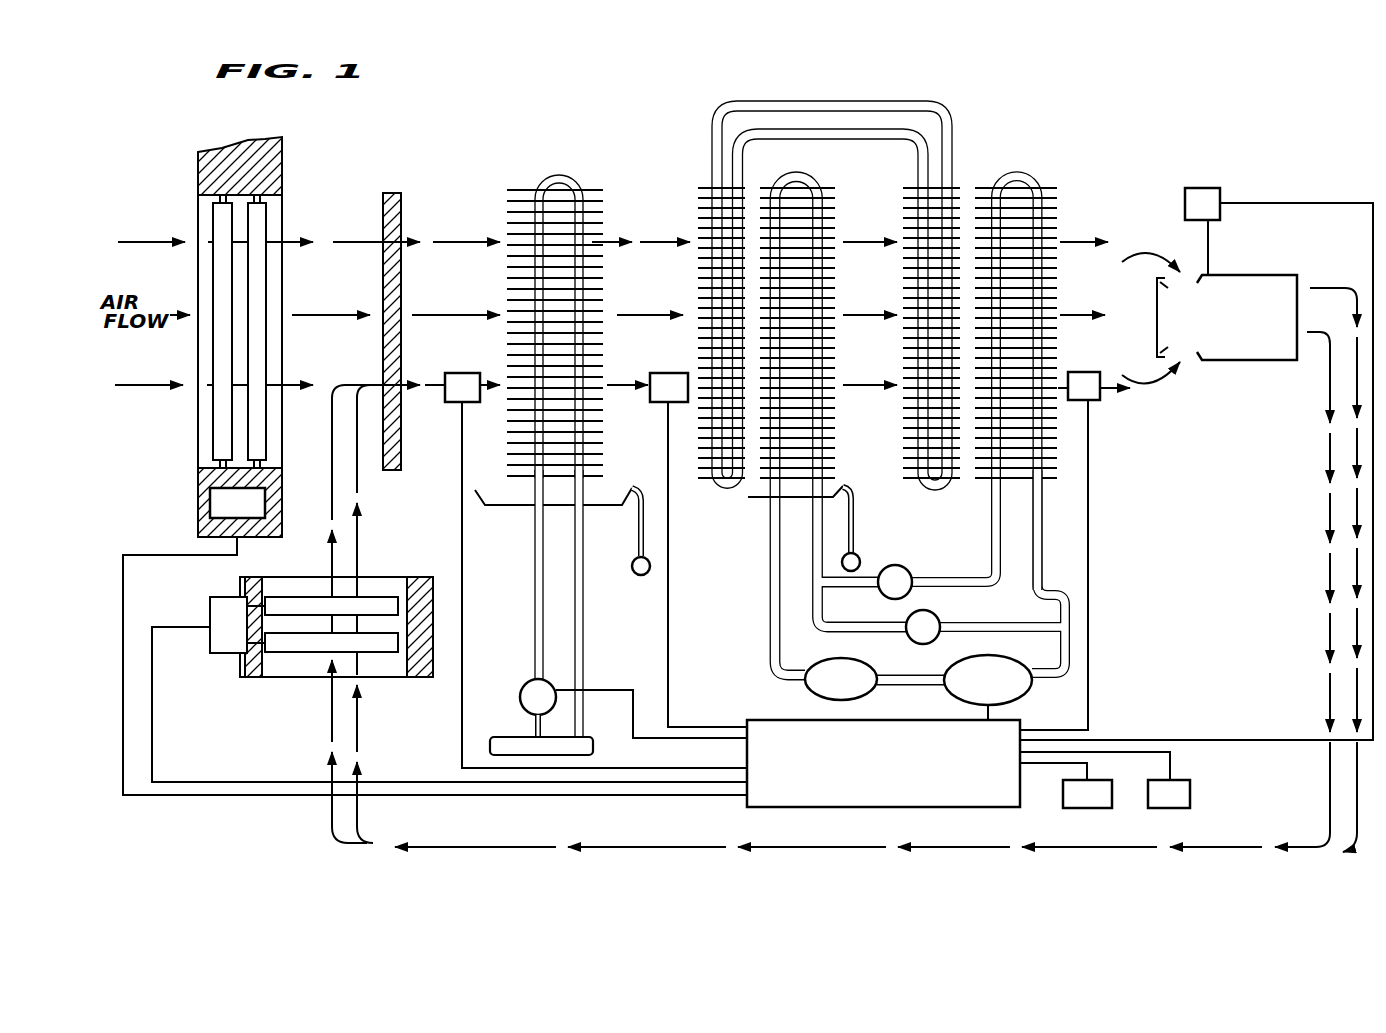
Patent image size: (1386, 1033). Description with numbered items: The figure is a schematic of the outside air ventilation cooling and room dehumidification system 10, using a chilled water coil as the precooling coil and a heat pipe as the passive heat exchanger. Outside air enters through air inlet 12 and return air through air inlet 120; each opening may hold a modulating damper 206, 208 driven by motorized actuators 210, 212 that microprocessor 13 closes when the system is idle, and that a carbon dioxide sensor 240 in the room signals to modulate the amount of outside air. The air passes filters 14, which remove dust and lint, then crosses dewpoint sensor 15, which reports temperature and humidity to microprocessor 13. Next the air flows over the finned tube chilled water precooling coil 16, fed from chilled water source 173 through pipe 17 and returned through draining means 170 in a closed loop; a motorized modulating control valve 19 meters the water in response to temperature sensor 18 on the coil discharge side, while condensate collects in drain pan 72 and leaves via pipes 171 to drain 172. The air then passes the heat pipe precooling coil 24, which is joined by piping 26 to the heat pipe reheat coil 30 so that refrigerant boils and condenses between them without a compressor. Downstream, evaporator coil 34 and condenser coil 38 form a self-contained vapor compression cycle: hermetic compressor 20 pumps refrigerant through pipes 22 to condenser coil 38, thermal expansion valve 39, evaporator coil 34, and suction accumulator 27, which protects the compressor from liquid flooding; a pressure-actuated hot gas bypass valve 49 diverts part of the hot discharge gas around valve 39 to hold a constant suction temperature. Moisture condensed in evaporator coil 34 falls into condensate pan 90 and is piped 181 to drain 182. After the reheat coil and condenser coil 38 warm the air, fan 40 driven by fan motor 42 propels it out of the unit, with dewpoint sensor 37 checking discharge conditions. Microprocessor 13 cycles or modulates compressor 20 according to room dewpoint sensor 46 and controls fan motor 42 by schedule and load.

The outside air ventilation cooling and room dehumidification system 10 is at (513, 132).
The outside air inlet 12 is at (198, 478).
The microprocessor controller 13 is at (755, 720).
The filters 14 is at (392, 193).
The dewpoint sensor 15 is at (465, 375).
The chilled water precooling coil 16 is at (510, 190).
The pipe 17 is at (533, 590).
The temperature sensor 18 is at (670, 375).
The modulating control valve 19 is at (525, 683).
The hermetic compressor 20 is at (1025, 668).
The pipes 22 is at (1045, 528).
The heat pipe precooling coil 24 is at (700, 190).
The piping 26 is at (888, 106).
The suction accumulator 27 is at (822, 662).
The heat pipe reheat coil 30 is at (958, 188).
The evaporator coil 34 is at (828, 188).
The dewpoint sensor 37 is at (1092, 374).
The condenser coil 38 is at (1052, 188).
The thermal expansion valve 39 is at (905, 566).
The fan 40 is at (1262, 275).
The fan motor 42 is at (1210, 188).
The dewpoint sensor 46 is at (1192, 780).
The hot gas bypass valve 49 is at (913, 643).
The condensate drain pan 72 is at (515, 505).
The condensate pan 90 is at (740, 500).
The return air inlet 120 is at (380, 590).
The draining means 170 is at (584, 604).
The pipes 171 is at (628, 510).
The drain 172 is at (632, 568).
The chilled water source 173 is at (515, 738).
The pipe 181 is at (858, 502).
The drain 182 is at (861, 560).
The modulating damper 206 is at (213, 440).
The modulating damper 208 is at (290, 600).
The outside air damper actuator 210 is at (250, 503).
The return air damper actuator 212 is at (212, 605).
The carbon dioxide sensor 240 is at (1105, 780).